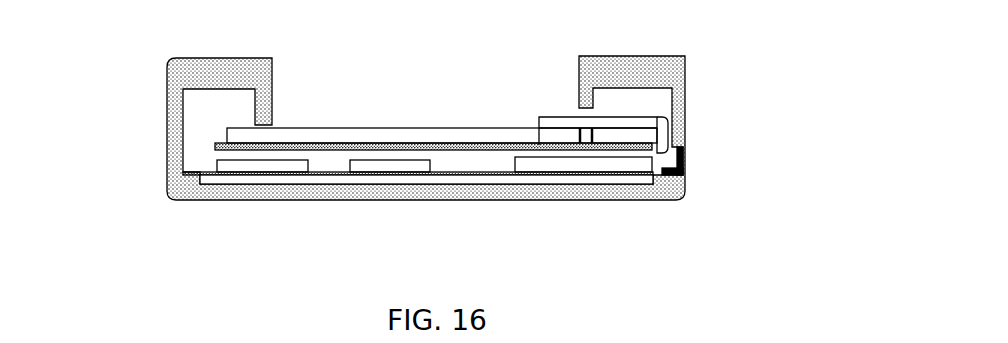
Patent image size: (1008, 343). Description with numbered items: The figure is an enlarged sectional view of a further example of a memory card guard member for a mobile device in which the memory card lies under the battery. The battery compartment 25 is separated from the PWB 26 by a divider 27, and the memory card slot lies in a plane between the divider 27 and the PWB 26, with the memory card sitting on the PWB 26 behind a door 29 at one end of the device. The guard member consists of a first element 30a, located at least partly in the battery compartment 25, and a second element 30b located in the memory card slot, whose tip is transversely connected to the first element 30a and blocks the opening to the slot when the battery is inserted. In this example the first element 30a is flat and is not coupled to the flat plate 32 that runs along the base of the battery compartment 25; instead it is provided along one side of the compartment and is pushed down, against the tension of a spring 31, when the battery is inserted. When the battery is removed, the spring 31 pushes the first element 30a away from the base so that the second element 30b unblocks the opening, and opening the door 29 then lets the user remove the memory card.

The battery compartment 25 is at (338, 106).
The PWB 26 is at (232, 185).
The divider 27 is at (458, 144).
The door 29 is at (687, 155).
The first element 30a is at (549, 117).
The second element 30b is at (668, 123).
The spring 31 is at (580, 128).
The flat plate 32 is at (392, 128).